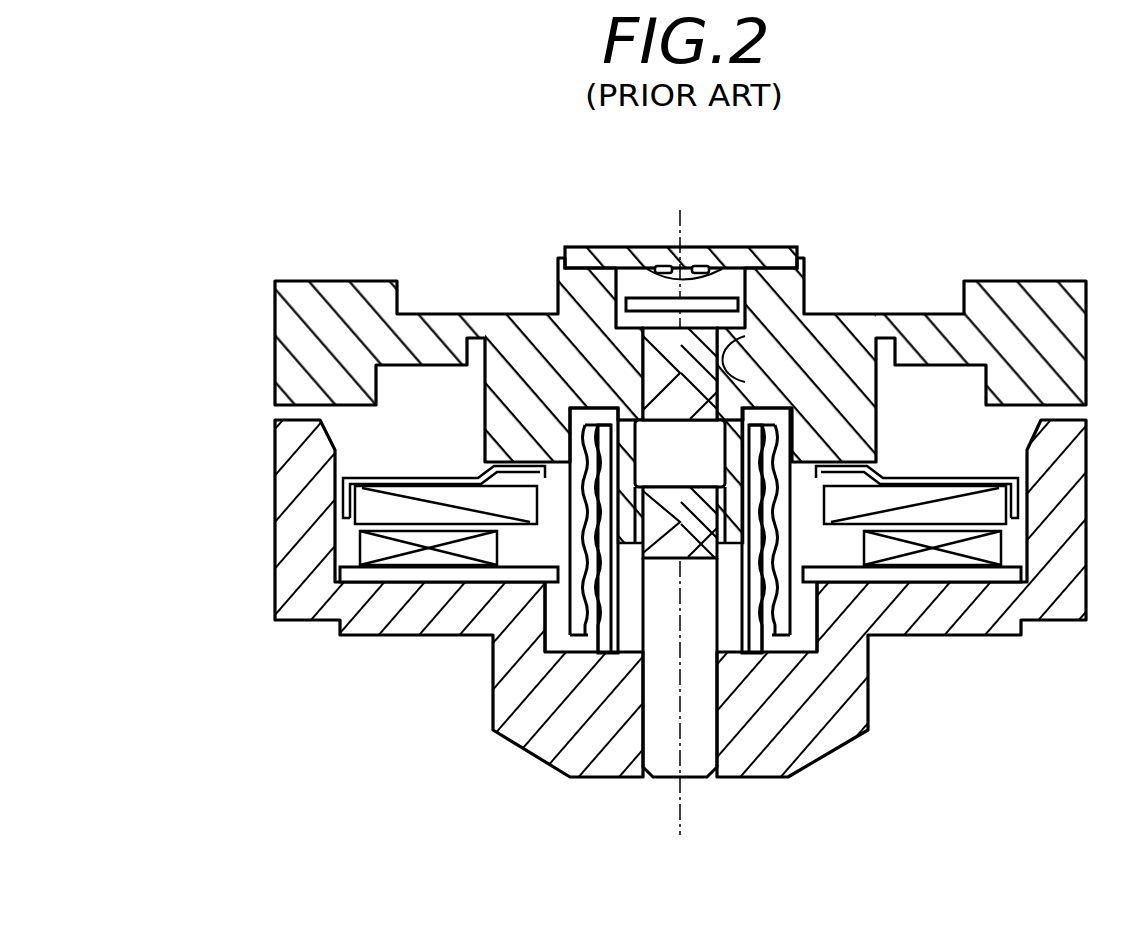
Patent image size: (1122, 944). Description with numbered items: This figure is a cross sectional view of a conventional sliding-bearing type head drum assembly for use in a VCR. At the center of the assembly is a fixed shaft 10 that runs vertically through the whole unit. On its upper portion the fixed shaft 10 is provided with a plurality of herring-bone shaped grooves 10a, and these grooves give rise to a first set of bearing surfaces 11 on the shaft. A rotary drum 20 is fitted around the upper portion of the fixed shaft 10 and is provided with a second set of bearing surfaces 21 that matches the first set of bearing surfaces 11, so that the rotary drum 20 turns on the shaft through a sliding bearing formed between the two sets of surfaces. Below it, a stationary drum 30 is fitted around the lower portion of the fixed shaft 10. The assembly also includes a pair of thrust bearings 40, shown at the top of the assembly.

The fixed shaft 10 is at (681, 752).
The herring-bone shaped grooves 10a is at (727, 355).
The first set of bearing surfaces 11 is at (803, 264).
The rotary drum 20 is at (287, 330).
The second set of bearing surfaces 21 is at (725, 400).
The stationary drum 30 is at (510, 727).
The thrust bearings 40 is at (665, 268).